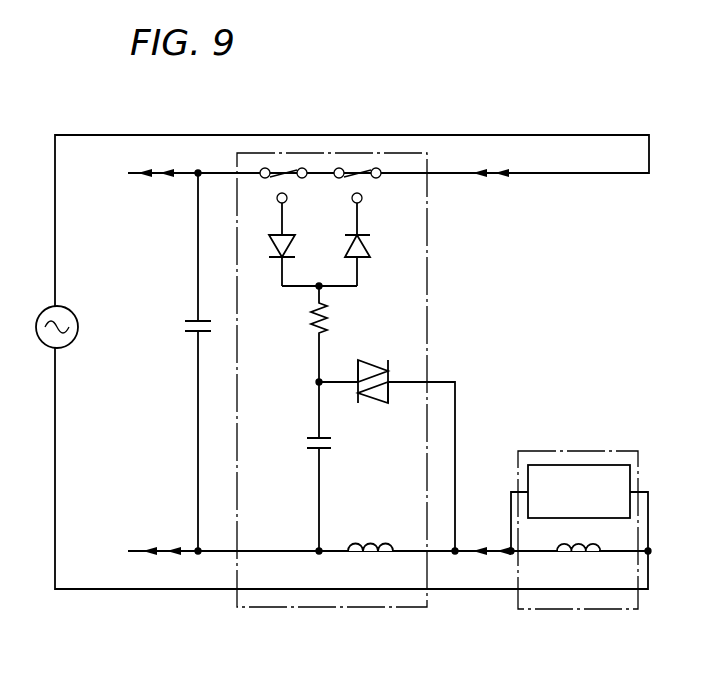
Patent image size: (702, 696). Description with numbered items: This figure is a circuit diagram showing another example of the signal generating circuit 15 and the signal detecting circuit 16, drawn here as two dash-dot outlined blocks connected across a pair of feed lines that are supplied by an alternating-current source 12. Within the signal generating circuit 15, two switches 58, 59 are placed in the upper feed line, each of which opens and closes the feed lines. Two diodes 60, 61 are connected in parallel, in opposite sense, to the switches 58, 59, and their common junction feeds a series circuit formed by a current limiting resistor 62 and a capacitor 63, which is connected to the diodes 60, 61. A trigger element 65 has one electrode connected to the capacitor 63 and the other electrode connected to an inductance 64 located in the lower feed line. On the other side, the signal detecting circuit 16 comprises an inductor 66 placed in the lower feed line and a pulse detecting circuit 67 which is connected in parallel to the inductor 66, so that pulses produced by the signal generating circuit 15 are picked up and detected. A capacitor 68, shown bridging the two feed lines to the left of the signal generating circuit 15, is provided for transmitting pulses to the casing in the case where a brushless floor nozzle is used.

The AC power source 12 is at (66, 308).
The signal generating circuit 15 is at (312, 608).
The signal detecting circuit 16 is at (572, 611).
The switch 58 is at (288, 170).
The switch 59 is at (363, 170).
The diode 60 is at (290, 245).
The diode 61 is at (367, 245).
The current limiting resistor 62 is at (330, 318).
The capacitor 63 is at (307, 440).
The inductance 64 is at (374, 544).
The trigger element 65 is at (376, 364).
The inductor 66 is at (570, 558).
The pulse detecting circuit 67 is at (597, 465).
The capacitor 68 is at (191, 318).